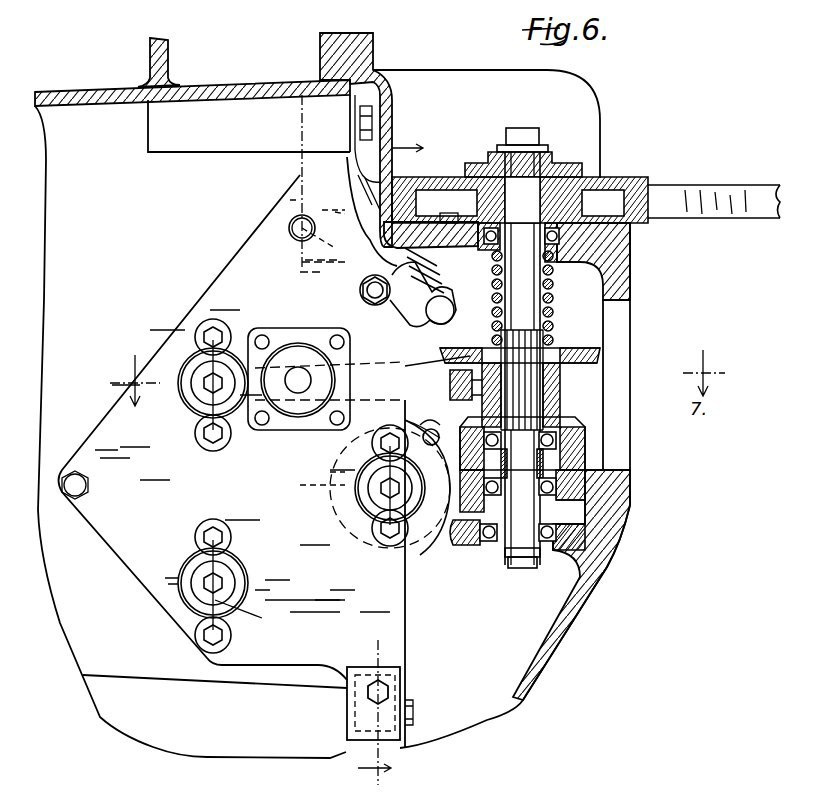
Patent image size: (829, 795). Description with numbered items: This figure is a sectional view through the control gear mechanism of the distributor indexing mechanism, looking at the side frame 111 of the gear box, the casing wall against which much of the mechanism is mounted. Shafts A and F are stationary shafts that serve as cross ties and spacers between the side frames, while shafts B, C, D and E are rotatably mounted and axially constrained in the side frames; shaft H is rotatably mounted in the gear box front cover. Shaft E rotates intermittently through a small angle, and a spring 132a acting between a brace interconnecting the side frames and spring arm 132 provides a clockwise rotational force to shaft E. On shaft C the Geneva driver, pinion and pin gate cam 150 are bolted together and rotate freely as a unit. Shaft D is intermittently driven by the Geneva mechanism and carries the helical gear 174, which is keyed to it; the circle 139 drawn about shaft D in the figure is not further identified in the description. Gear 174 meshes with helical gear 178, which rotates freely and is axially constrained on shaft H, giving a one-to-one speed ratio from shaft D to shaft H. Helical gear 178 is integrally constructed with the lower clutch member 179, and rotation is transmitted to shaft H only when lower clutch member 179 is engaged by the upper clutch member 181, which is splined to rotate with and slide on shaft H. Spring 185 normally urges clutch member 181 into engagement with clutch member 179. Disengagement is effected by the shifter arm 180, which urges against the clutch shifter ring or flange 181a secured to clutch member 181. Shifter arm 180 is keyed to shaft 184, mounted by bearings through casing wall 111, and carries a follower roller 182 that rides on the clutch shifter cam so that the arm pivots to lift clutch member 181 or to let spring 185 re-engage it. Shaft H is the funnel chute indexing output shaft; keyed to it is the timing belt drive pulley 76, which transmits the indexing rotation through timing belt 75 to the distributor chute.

The timing belt 75 is at (720, 197).
The timing belt drive pulley 76 is at (628, 182).
The side frame 111 is at (212, 298).
The spring arm 132 is at (432, 312).
The spring 132a is at (470, 275).
The gear pitch circle 139 is at (335, 482).
The pin gate cam 150 is at (332, 414).
The helical gear 174 is at (435, 540).
The helical gear 178 is at (578, 490).
The lower clutch member 179 is at (565, 458).
The shifter arm 180 is at (418, 373).
The upper clutch member 181 is at (562, 386).
The clutch shifter ring or flange 181a is at (590, 354).
The follower roller 182 is at (431, 430).
The shaft 184 is at (298, 378).
The spring 185 is at (553, 322).
The shaft A is at (390, 690).
The shaft B is at (210, 582).
The shaft C is at (212, 383).
The shaft D is at (388, 490).
The shaft E is at (302, 226).
The shaft F is at (360, 290).
The shaft H is at (537, 286).